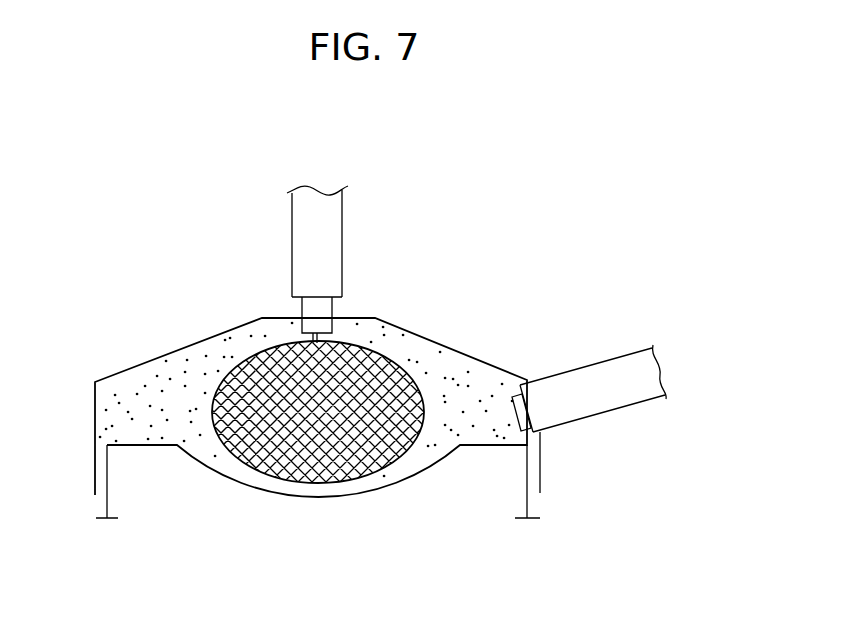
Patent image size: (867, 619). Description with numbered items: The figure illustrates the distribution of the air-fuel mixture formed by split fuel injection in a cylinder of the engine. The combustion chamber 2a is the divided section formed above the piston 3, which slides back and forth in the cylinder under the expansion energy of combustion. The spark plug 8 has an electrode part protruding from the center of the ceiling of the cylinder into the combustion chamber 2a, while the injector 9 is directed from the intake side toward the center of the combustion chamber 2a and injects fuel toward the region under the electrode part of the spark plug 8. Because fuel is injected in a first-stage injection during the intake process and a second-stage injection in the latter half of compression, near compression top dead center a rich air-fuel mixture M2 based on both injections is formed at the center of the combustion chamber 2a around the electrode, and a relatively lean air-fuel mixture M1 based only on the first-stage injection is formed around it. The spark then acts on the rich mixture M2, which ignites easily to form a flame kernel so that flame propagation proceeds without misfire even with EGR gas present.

The combustion chamber 2a is at (428, 375).
The piston 3 is at (512, 467).
The spark plug 8 is at (308, 243).
The injector 9 is at (623, 372).
The relatively lean air-fuel mixture M1 is at (157, 432).
The rich air-fuel mixture M2 is at (310, 430).